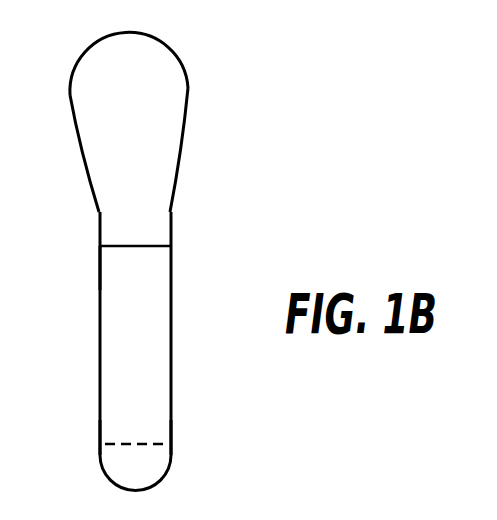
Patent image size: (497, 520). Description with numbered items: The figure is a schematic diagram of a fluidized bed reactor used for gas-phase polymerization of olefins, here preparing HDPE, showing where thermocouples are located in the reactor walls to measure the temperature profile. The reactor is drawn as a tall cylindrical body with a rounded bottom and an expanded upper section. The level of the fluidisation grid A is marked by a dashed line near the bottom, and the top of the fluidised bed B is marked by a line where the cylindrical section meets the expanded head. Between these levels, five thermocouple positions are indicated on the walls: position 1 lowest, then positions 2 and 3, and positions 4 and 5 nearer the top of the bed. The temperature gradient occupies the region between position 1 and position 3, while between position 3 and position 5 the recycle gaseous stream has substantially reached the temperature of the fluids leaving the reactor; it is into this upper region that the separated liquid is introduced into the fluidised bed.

The thermocouple position 1 is at (163, 465).
The thermocouple position 2 is at (163, 438).
The thermocouple position 3 is at (110, 433).
The thermocouple position 4 is at (110, 317).
The thermocouple position 5 is at (110, 270).
The fluidisation grid A is at (128, 443).
The top of the fluidised bed B is at (137, 245).